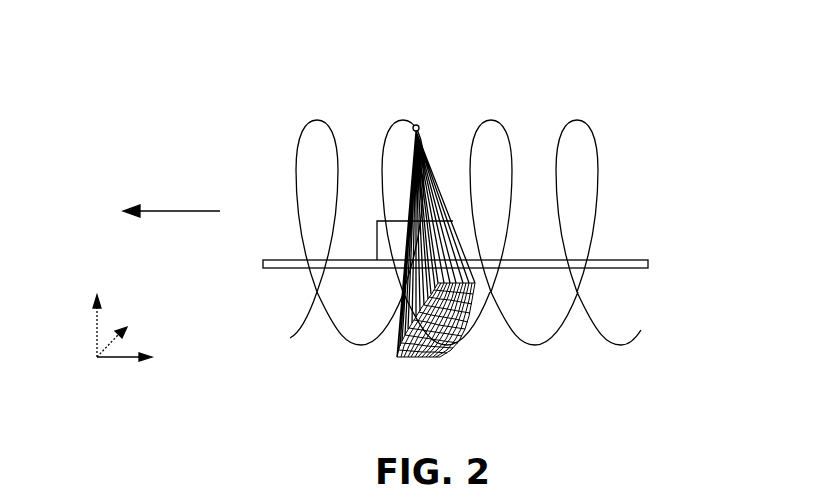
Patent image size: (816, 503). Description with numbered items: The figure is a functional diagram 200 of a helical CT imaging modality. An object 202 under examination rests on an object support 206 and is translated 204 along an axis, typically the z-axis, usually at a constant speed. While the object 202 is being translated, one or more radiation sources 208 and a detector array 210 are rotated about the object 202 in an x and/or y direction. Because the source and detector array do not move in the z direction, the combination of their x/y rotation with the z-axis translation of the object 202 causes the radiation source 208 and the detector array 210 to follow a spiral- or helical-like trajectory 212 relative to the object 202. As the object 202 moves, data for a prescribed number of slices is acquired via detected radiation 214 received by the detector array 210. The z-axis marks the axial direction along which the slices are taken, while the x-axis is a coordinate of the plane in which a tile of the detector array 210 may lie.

The functional diagram 200 is at (153, 63).
The object 202 is at (377, 221).
The translation 204 is at (170, 211).
The object support 206 is at (637, 259).
The radiation source 208 is at (418, 125).
The detector array 210 is at (415, 358).
The helical trajectory 212 is at (577, 120).
The detected radiation 214 is at (420, 135).